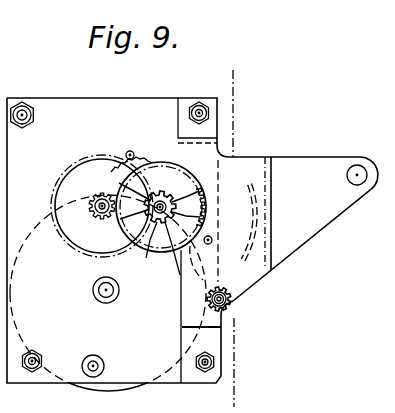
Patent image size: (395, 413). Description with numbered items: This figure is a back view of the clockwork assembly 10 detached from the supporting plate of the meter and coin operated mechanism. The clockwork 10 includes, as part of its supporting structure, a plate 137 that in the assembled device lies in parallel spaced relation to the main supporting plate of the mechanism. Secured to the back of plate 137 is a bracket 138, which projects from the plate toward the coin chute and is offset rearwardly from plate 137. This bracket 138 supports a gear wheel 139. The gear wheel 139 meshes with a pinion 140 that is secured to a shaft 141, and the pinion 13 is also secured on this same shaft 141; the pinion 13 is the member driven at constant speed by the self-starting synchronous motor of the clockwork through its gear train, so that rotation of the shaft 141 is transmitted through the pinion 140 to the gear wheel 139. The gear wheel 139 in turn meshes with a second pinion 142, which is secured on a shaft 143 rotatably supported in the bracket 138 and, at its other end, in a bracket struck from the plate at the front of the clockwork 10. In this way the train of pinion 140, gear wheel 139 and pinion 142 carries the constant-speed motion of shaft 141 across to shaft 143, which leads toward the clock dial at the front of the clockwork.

The clockwork assembly 10 is at (215, 83).
The pinion 13 is at (159, 192).
The plate 137 is at (67, 107).
The bracket 138 is at (266, 271).
The gear wheel 139 is at (183, 258).
The pinion 140 is at (156, 222).
The shaft 141 is at (164, 204).
The pinion 142 is at (233, 307).
The shaft 143 is at (237, 315).